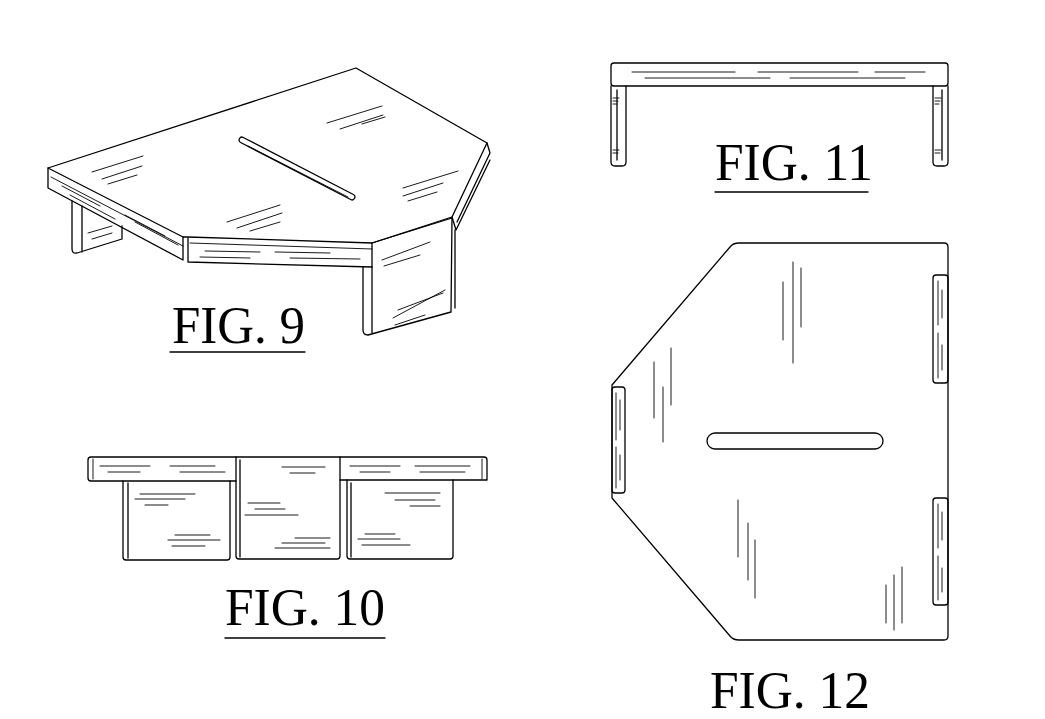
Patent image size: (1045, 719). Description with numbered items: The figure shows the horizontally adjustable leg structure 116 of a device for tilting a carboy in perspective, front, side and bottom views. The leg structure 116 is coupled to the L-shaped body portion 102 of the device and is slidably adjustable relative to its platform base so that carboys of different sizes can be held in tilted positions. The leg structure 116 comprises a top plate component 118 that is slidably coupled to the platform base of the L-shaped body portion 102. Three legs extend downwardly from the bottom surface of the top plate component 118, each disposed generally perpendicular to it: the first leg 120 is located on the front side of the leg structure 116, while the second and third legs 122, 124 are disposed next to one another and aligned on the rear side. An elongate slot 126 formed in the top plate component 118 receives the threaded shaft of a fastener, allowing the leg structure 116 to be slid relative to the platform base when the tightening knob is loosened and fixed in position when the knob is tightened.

In FIG. 11, the L-shaped body portion 102 is at (618, 128).
In FIG. 9, the horizontally adjustable leg structure 116 is at (287, 206).
In FIG. 10, the horizontally adjustable leg structure 116 is at (285, 539).
In FIG. 11, the horizontally adjustable leg structure 116 is at (735, 121).
In FIG. 12, the horizontally adjustable leg structure 116 is at (724, 460).
In FIG. 9, the top plate component 118 is at (198, 178).
In FIG. 10, the top plate component 118 is at (161, 462).
In FIG. 11, the top plate component 118 is at (748, 77).
In FIG. 12, the top plate component 118 is at (697, 325).
In FIG. 9, the first leg 120 is at (407, 292).
In FIG. 10, the first leg 120 is at (267, 547).
In FIG. 12, the first leg 120 is at (615, 442).
In FIG. 9, the second leg 122 is at (103, 245).
In FIG. 10, the second leg 122 is at (153, 527).
In FIG. 12, the second leg 122 is at (937, 532).
In FIG. 10, the third leg 124 is at (410, 528).
In FIG. 11, the third leg 124 is at (940, 130).
In FIG. 12, the third leg 124 is at (937, 320).
In FIG. 9, the elongate slot 126 is at (265, 150).
In FIG. 12, the elongate slot 126 is at (738, 452).